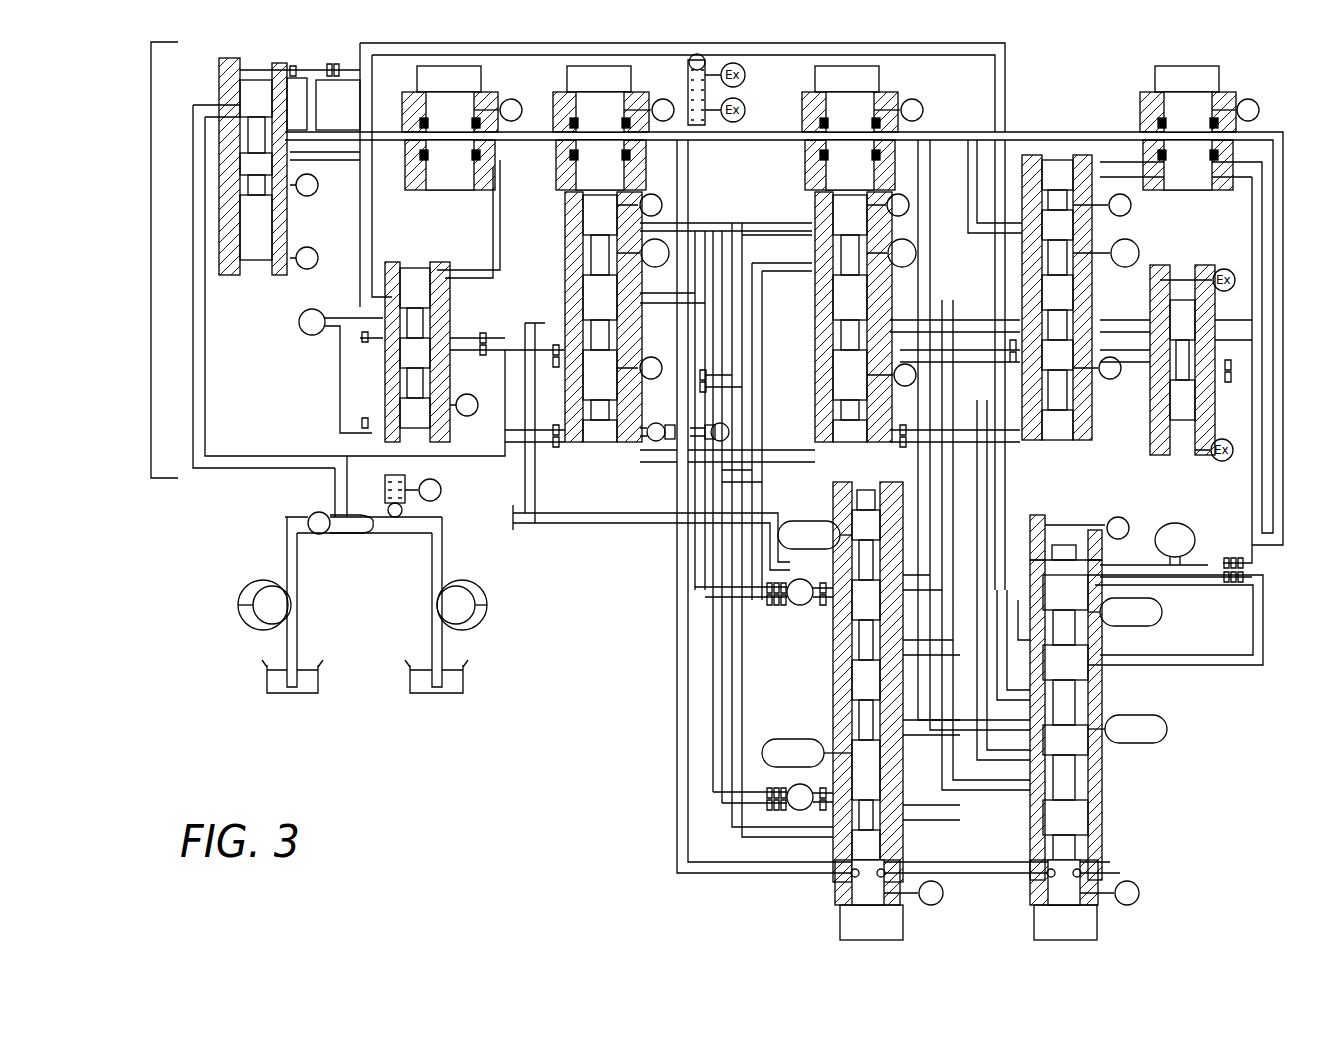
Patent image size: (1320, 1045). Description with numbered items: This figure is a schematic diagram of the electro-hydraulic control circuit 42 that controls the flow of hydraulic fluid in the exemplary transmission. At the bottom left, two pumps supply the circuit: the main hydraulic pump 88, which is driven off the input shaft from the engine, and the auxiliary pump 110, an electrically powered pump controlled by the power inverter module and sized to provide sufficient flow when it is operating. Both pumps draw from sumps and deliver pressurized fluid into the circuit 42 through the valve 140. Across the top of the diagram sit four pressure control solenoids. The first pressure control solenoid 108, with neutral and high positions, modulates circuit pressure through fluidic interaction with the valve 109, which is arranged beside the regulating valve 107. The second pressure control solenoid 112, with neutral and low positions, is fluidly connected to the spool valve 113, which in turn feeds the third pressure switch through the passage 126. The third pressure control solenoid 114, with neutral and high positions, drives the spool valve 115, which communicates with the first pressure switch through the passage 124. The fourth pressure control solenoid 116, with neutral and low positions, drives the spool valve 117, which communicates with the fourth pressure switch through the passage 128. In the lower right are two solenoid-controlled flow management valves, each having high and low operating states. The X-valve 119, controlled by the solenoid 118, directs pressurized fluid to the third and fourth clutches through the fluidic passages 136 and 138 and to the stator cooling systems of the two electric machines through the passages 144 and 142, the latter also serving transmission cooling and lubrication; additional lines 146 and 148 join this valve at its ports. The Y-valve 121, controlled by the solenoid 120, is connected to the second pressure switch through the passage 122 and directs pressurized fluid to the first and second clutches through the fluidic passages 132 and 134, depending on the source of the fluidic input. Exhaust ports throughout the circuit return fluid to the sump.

The electro-hydraulic control circuit 42 is at (150, 128).
The main hydraulic pump 88 is at (465, 628).
The regulator valve 107 is at (258, 250).
The pressure control solenoid PCS1 108 is at (422, 65).
The valve 109 is at (443, 290).
The auxiliary pump 110 is at (262, 628).
The pressure control solenoid PCS2 112 is at (1160, 65).
The spool valve 113 is at (1062, 292).
The pressure control solenoid PCS3 114 is at (822, 65).
The spool valve 115 is at (830, 192).
The pressure control solenoid PCS4 116 is at (573, 65).
The spool valve 117 is at (600, 232).
The X-valve solenoid 118 is at (855, 928).
The X-valve 119 is at (860, 672).
The Y-valve solenoid 120 is at (1048, 928).
The Y-valve 121 is at (1088, 783).
The passage 122 is at (1190, 523).
The passage 124 is at (912, 242).
The passage 126 is at (1135, 242).
The passage 128 is at (663, 240).
The fluidic passage 132 is at (1167, 729).
The fluidic passage 134 is at (1162, 615).
The fluidic passage 136 is at (792, 739).
The fluidic passage 138 is at (804, 521).
The valve 140 is at (315, 515).
The passage 142 is at (800, 812).
The passage 144 is at (800, 606).
The fluid line 146 is at (773, 603).
The fluid line 148 is at (773, 812).